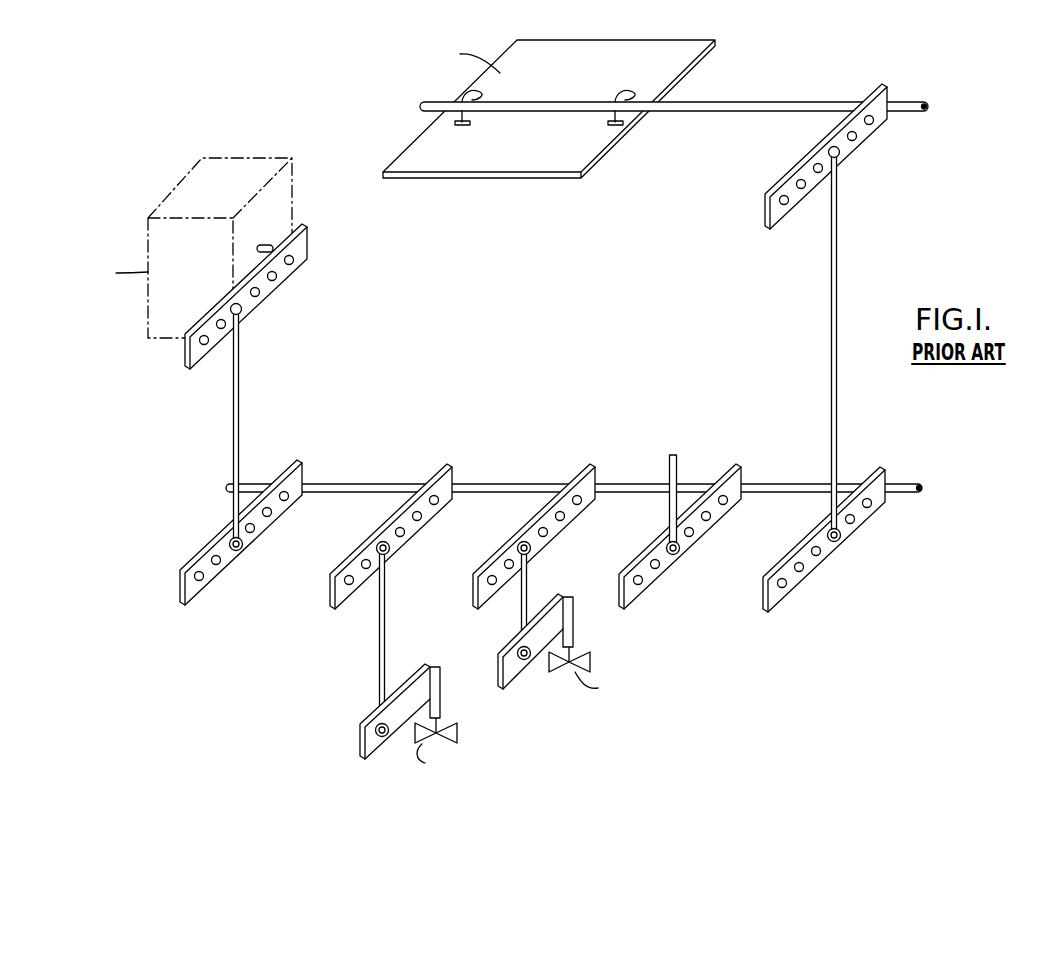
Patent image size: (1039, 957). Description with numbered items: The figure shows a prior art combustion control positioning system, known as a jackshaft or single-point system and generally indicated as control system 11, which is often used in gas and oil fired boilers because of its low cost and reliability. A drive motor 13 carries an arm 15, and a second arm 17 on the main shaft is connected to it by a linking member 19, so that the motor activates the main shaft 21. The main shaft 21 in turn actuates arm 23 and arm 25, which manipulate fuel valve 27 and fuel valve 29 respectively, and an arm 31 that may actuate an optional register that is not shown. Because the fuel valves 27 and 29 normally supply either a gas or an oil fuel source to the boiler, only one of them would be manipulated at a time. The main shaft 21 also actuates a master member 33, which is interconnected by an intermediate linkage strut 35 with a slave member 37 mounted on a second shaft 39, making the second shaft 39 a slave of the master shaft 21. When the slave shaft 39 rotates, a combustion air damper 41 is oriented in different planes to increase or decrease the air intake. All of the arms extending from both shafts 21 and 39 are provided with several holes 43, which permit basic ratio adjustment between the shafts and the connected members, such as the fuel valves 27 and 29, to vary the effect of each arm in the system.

The control system 11 is at (527, 446).
The drive motor 13 is at (148, 232).
The arm 15 is at (187, 358).
The arm 17 is at (183, 590).
The linking member 19 is at (240, 392).
The main shaft 21 is at (500, 484).
The arm 23 is at (333, 592).
The arm 25 is at (477, 592).
The fuel valve 27 is at (457, 733).
The fuel valve 29 is at (592, 660).
The arm 31 is at (655, 576).
The master member 33 is at (798, 583).
The intermediate linkage strut 35 is at (829, 376).
The slave member 37 is at (766, 213).
The second shaft 39 is at (758, 102).
The combustion air damper 41 is at (544, 163).
The holes 43 is at (873, 124).